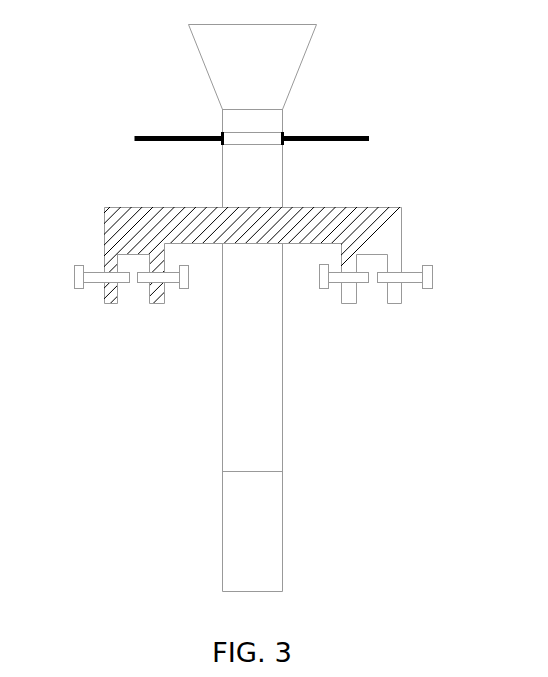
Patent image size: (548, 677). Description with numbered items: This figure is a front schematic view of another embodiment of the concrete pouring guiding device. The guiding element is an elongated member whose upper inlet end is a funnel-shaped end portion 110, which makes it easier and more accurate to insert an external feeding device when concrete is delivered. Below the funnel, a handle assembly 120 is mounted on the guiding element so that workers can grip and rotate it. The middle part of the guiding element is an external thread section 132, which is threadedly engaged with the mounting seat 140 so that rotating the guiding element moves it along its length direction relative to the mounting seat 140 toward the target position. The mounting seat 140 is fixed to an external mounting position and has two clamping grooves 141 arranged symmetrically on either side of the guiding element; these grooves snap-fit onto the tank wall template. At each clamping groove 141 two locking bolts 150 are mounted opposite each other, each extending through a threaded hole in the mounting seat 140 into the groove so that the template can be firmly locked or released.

The funnel-shaped end portion 110 is at (272, 87).
The handle assembly 120 is at (360, 134).
The external thread section 132 is at (262, 412).
The mounting seat 140 is at (112, 223).
The clamping groove 141 is at (133, 275).
The locking bolt 150 is at (77, 267).